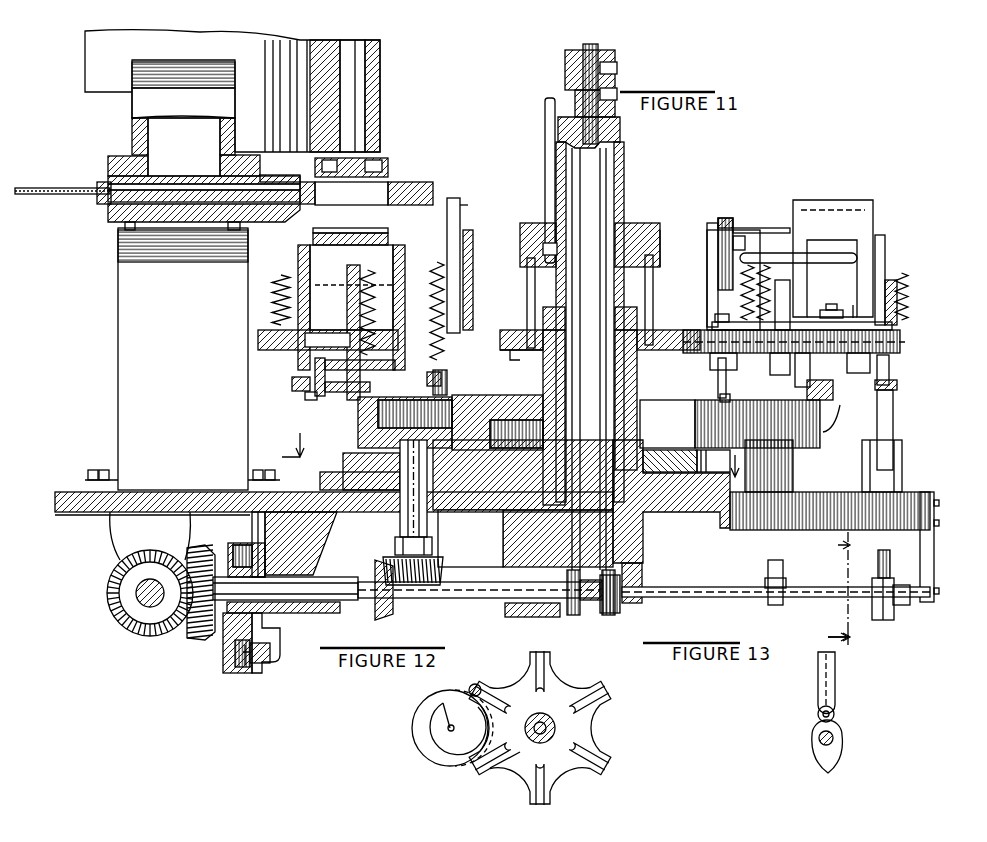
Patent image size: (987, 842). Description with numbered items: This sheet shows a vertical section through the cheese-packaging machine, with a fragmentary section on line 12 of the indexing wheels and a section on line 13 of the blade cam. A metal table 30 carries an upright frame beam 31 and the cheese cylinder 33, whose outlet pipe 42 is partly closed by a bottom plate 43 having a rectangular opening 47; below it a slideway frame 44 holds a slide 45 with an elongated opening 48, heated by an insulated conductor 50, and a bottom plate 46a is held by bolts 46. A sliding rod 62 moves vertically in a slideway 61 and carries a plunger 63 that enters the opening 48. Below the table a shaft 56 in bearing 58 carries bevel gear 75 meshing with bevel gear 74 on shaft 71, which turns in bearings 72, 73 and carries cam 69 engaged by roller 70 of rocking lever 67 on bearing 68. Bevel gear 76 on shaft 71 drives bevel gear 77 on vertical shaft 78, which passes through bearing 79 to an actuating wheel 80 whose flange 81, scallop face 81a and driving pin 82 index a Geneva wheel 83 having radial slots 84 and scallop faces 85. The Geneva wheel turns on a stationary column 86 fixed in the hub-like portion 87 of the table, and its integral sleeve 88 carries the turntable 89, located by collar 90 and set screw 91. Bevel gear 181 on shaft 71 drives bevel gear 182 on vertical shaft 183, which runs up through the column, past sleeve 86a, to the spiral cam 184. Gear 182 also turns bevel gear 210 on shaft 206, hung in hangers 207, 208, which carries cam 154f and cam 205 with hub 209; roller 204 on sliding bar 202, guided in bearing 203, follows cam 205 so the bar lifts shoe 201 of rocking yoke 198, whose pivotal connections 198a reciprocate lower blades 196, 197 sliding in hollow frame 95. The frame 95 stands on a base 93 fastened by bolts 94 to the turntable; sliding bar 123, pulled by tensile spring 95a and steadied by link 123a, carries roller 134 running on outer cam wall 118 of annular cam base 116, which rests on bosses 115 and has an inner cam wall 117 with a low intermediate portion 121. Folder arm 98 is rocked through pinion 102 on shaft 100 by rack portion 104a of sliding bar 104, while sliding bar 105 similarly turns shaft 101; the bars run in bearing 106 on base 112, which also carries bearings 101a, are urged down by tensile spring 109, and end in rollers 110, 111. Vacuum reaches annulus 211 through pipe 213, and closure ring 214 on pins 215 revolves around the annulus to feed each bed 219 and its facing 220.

In FIG. 11, the cheese cylinder 33 is at (90, 63).
In FIG. 11, the outlet pipe 42 is at (183, 103).
In FIG. 11, the slideway 61 is at (378, 70).
In FIG. 11, the sliding rod 62 is at (365, 105).
In FIG. 11, the plunger 63 is at (383, 160).
In FIG. 11, the slideway frame 44 is at (110, 170).
In FIG. 11, the opening 47 is at (172, 178).
In FIG. 11, the bottom plate 43 is at (267, 178).
In FIG. 11, the elongated opening 48 is at (380, 185).
In FIG. 11, the slide 45 is at (420, 190).
In FIG. 11, the insulated conductor 50 is at (63, 187).
In FIG. 11, the bottom plate 46a is at (108, 212).
In FIG. 11, the bolts 46 is at (120, 224).
In FIG. 11, the sliding bar 105 is at (455, 205).
In FIG. 11, the frame beam 31 is at (120, 312).
In FIG. 11, the facing 220 is at (350, 221).
In FIG. 11, the bed 219 is at (370, 235).
In FIG. 11, the hollow frame 95 is at (282, 298).
In FIG. 11, the tensile spring 95a is at (380, 262).
In FIG. 11, the tensile spring 109 is at (436, 270).
In FIG. 11, the shaft 101 is at (440, 232).
In FIG. 11, the lower blade 196 is at (903, 260).
In FIG. 11, the lower blade 197 is at (790, 262).
In FIG. 11, the rocking yoke 198 is at (293, 386).
In FIG. 11, the pivotal connection 198a is at (896, 372).
In FIG. 11, the sliding bar 123 is at (335, 385).
In FIG. 11, the link 123a is at (311, 406).
In FIG. 11, the roller 111 is at (436, 384).
In FIG. 11, the cam base 116 is at (358, 428).
In FIG. 11, the cam wall 118 is at (405, 402).
In FIG. 11, the cam wall 117 is at (497, 411).
In FIG. 11, the actuating wheel 80 is at (350, 460).
In FIG. 12, the actuating wheel 80 is at (422, 748).
In FIG. 11, the flange 81 is at (322, 480).
In FIG. 12, the flange 81 is at (412, 732).
In FIG. 11, the section line 12 is at (513, 460).
In FIG. 11, the endless spiral cam 184 is at (566, 66).
In FIG. 11, the vertical shaft 183 is at (620, 135).
In FIG. 12, the vertical shaft 183 is at (545, 716).
In FIG. 11, the sleeve 86a is at (622, 155).
In FIG. 12, the sleeve 86a is at (526, 758).
In FIG. 11, the pipe 213 is at (548, 122).
In FIG. 11, the annulus 211 is at (630, 228).
In FIG. 11, the closure ring 214 is at (660, 230).
In FIG. 11, the pins 215 is at (531, 292).
In FIG. 11, the collar 90 is at (556, 310).
In FIG. 11, the set screw 91 is at (627, 309).
In FIG. 11, the turntable 89 is at (516, 352).
In FIG. 11, the sleeve 88 is at (545, 400).
In FIG. 12, the sleeve 88 is at (594, 726).
In FIG. 11, the stationary column 86 is at (640, 380).
In FIG. 11, the intermediate portion 121 is at (665, 420).
In FIG. 11, the sliding bar 104 is at (718, 383).
In FIG. 11, the roller 110 is at (742, 390).
In FIG. 11, the Geneva wheel 83 is at (668, 472).
In FIG. 11, the scallop faces 85 is at (700, 472).
In FIG. 12, the scallop faces 85 is at (518, 674).
In FIG. 11, the bosses 115 is at (785, 478).
In FIG. 11, the bearing 106 is at (712, 308).
In FIG. 11, the bearings 101a is at (712, 225).
In FIG. 11, the rack portion 104a is at (722, 255).
In FIG. 11, the pinion 102 is at (738, 232).
In FIG. 11, the shaft 100 is at (776, 230).
In FIG. 11, the folder arm 98 is at (873, 222).
In FIG. 11, the bolts 94 is at (828, 303).
In FIG. 11, the base 93 is at (853, 312).
In FIG. 11, the base 112 is at (715, 326).
In FIG. 11, the shoe 201 is at (897, 386).
In FIG. 11, the sliding bar 202 is at (893, 412).
In FIG. 13, the sliding bar 202 is at (820, 684).
In FIG. 11, the roller 134 is at (840, 420).
In FIG. 11, the bearing 203 is at (900, 462).
In FIG. 11, the table 30 is at (170, 494).
In FIG. 11, the hub-like portion 87 is at (645, 530).
In FIG. 11, the hanger 207 is at (934, 552).
In FIG. 11, the hanger 208 is at (645, 568).
In FIG. 11, the revoluble shaft 206 is at (800, 592).
In FIG. 13, the revoluble shaft 206 is at (836, 739).
In FIG. 11, the cam 154f is at (770, 566).
In FIG. 11, the section line 13 is at (840, 589).
In FIG. 13, the section line 13 is at (837, 632).
In FIG. 11, the roller 204 is at (888, 575).
In FIG. 13, the roller 204 is at (836, 715).
In FIG. 11, the hub 209 is at (895, 594).
In FIG. 11, the cam 205 is at (890, 614).
In FIG. 13, the cam 205 is at (841, 758).
In FIG. 11, the bearing 58 is at (118, 520).
In FIG. 11, the bevel gear 75 is at (107, 585).
In FIG. 11, the revoluble shaft 56 is at (147, 602).
In FIG. 11, the bevel gear 74 is at (205, 638).
In FIG. 11, the bearing 73 is at (285, 612).
In FIG. 11, the bearing 68 is at (282, 645).
In FIG. 11, the rocking lever 67 is at (265, 666).
In FIG. 11, the roller 70 is at (248, 668).
In FIG. 11, the cam 69 is at (238, 670).
In FIG. 11, the vertical shaft 78 is at (400, 515).
In FIG. 12, the vertical shaft 78 is at (448, 731).
In FIG. 11, the bearing 79 is at (395, 545).
In FIG. 11, the bevel gear 77 is at (440, 560).
In FIG. 11, the bevel gear 76 is at (388, 615).
In FIG. 11, the revoluble shaft 71 is at (466, 608).
In FIG. 11, the bearing 72 is at (545, 616).
In FIG. 11, the bevel gear 181 is at (572, 616).
In FIG. 11, the bevel gear 182 is at (591, 582).
In FIG. 11, the bevel gear 210 is at (622, 603).
In FIG. 12, the scallop face 81a is at (440, 706).
In FIG. 12, the driving pin 82 is at (479, 686).
In FIG. 12, the slots 84 is at (540, 650).